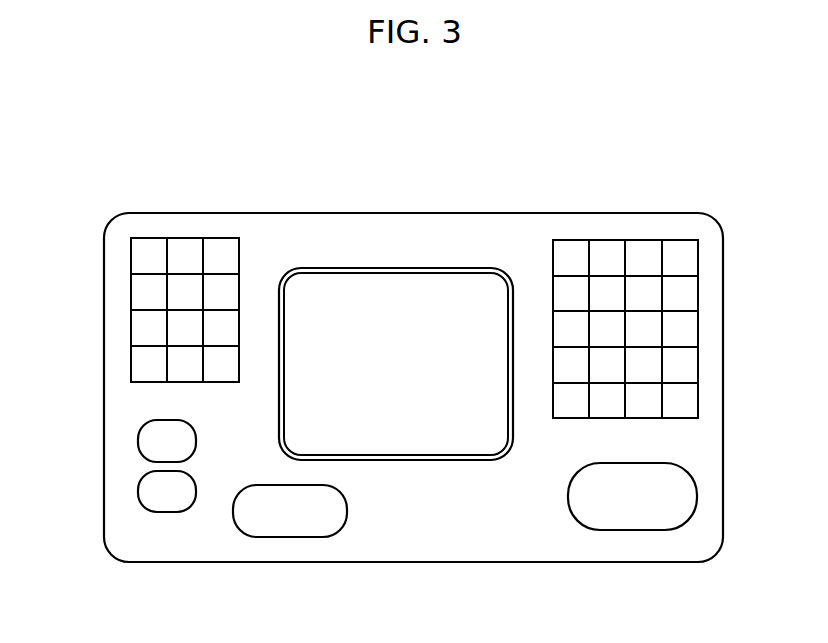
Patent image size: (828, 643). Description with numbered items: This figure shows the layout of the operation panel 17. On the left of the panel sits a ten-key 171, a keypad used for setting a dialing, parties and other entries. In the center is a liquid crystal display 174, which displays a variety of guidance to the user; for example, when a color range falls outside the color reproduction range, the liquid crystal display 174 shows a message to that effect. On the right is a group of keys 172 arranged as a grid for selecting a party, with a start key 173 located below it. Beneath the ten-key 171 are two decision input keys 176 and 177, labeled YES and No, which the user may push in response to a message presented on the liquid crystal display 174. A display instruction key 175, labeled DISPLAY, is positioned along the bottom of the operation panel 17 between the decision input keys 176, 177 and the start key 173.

The operation panel 17 is at (424, 124).
The ten-key 171 is at (178, 238).
The group of keys 172 is at (610, 240).
The start key 173 is at (620, 530).
The liquid crystal display 174 is at (415, 268).
The display instruction key 175 is at (285, 537).
The decision input key 176 is at (138, 440).
The decision input key 177 is at (138, 491).